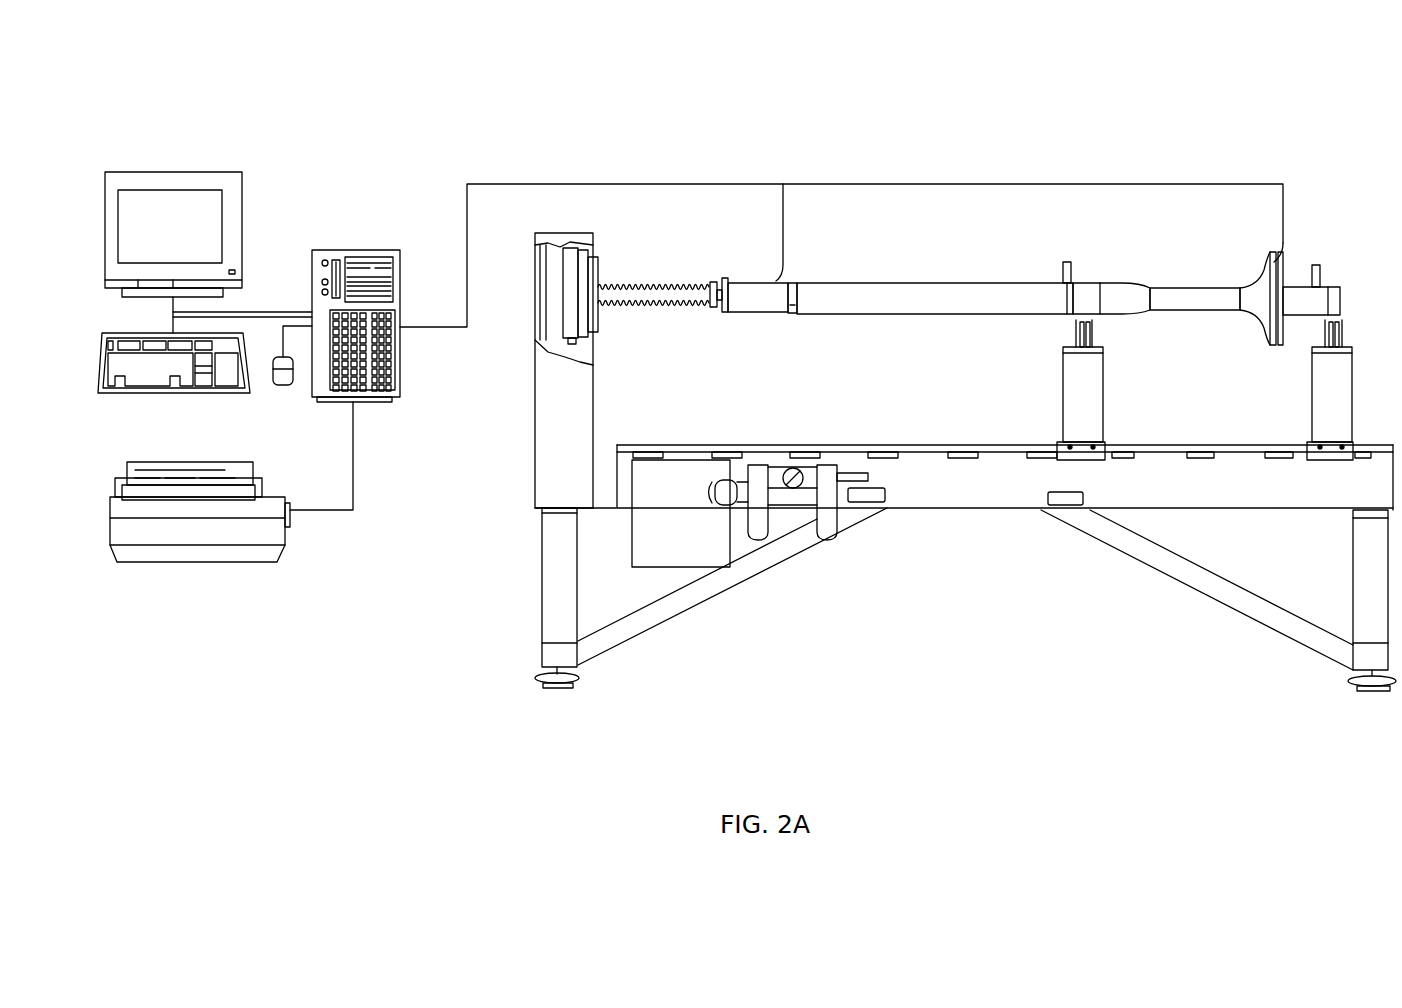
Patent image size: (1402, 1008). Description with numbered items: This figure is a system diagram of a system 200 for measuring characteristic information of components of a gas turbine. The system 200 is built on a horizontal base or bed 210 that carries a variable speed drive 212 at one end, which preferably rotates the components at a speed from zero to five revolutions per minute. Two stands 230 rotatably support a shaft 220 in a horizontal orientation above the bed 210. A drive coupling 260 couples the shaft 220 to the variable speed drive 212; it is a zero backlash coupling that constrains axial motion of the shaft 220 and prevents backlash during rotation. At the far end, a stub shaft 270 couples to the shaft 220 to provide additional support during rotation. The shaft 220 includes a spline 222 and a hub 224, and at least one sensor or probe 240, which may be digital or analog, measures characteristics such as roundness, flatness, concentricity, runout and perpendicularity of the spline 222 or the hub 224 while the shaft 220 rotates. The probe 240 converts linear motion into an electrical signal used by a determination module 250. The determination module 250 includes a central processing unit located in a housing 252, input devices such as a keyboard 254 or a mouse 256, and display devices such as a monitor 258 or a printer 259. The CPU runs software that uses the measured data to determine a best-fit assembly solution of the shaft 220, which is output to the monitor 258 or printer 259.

The system 200 is at (797, 144).
The horizontal base or bed 210 is at (950, 500).
The variable speed drive 212 is at (570, 327).
The shaft 220 is at (886, 290).
The spline 222 is at (758, 300).
The hub 224 is at (1260, 323).
The stands 230 is at (1095, 394).
The sensor or probe 240 is at (780, 277).
The determination module 250 is at (331, 199).
The housing 252 is at (368, 250).
The keyboard 254 is at (167, 395).
The mouse 256 is at (282, 388).
The monitor 258 is at (174, 171).
The printer 259 is at (201, 551).
The drive coupling 260 is at (650, 290).
The stub shaft 270 is at (1323, 287).